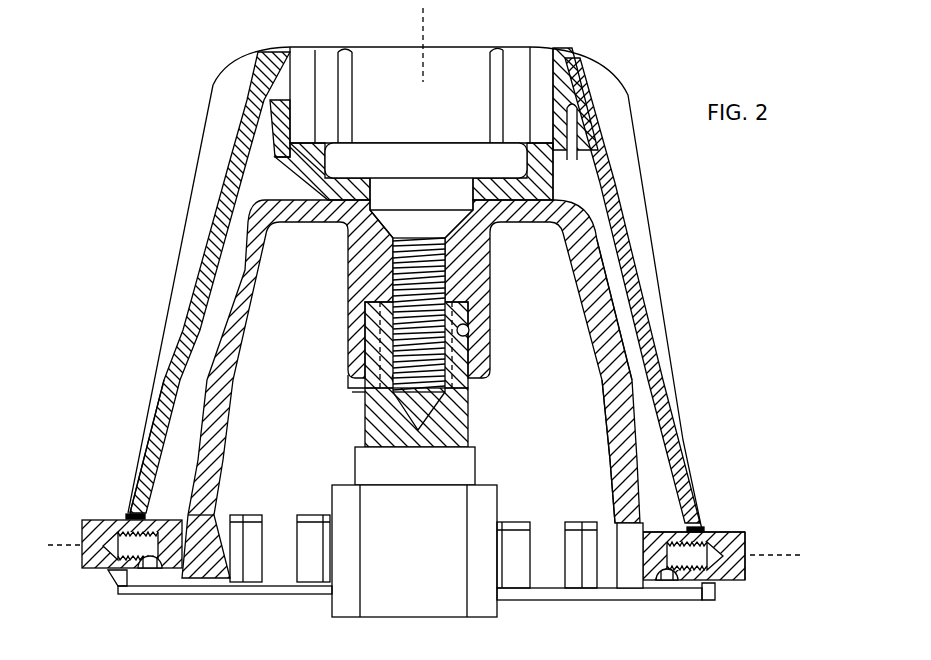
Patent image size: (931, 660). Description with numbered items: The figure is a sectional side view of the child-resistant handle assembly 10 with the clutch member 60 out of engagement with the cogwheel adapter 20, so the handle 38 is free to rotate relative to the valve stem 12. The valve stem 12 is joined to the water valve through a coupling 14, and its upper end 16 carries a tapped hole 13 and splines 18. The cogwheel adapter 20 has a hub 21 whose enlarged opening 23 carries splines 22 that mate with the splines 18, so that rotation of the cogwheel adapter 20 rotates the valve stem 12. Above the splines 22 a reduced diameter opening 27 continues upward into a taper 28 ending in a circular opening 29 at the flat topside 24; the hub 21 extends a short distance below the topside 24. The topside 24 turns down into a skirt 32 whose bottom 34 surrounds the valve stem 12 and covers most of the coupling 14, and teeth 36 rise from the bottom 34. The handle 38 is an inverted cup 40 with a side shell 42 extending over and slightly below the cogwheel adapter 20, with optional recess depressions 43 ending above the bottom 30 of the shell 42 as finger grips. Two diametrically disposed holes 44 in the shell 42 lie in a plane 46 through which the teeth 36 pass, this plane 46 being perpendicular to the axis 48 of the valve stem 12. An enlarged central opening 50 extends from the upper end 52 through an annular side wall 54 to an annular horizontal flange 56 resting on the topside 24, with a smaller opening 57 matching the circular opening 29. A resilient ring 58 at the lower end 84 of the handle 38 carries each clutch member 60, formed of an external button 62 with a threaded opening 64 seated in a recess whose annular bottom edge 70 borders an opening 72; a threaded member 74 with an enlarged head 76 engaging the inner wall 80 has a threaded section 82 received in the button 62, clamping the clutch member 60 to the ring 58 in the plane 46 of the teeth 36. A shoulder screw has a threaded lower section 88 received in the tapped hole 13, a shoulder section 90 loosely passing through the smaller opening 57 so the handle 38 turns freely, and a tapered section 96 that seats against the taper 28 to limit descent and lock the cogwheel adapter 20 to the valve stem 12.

The child-resistant handle assembly 10 is at (638, 60).
The valve stem 12 is at (483, 446).
The tapped hole 13 is at (372, 388).
The coupling 14 is at (335, 617).
The upper end 16 is at (372, 428).
The splines 18 is at (354, 400).
The cogwheel adapter 20 is at (612, 317).
The hub 21 is at (348, 247).
The splines 22 is at (370, 347).
The enlarged opening 23 is at (462, 323).
The flat topside 24 is at (545, 186).
The reduced diameter opening 27 is at (450, 272).
The taper 28 is at (440, 213).
The circular opening 29 is at (396, 210).
The bottom 30 is at (123, 590).
The skirt 32 is at (600, 300).
The bottom 34 is at (633, 592).
The teeth 36 is at (607, 573).
The handle 38 is at (162, 248).
The inverted cup 40 is at (160, 414).
The side shell 42 is at (148, 452).
The recess depressions 43 is at (204, 152).
The holes 44 is at (690, 532).
The plane 46 is at (64, 540).
The axis 48 is at (413, 34).
The enlarged central opening 50 is at (467, 58).
The upper end 52 is at (520, 47).
The annular side wall 54 is at (567, 72).
The annular horizontal flange 56 is at (508, 193).
The smaller opening 57 is at (407, 213).
The resilient ring 58 is at (140, 583).
The clutch member 60 is at (762, 527).
The external button 62 is at (732, 562).
The threaded opening 64 is at (152, 580).
The annular bottom edge 70 is at (130, 523).
The opening 72 is at (657, 573).
The threaded member 74 is at (656, 533).
The enlarged head 76 is at (630, 547).
The inner wall 80 is at (513, 513).
The threaded section 82 is at (700, 573).
The lower end 84 is at (692, 503).
The threaded lower section 88 is at (420, 358).
The shoulder section 90 is at (490, 228).
The tapered section 96 is at (410, 218).